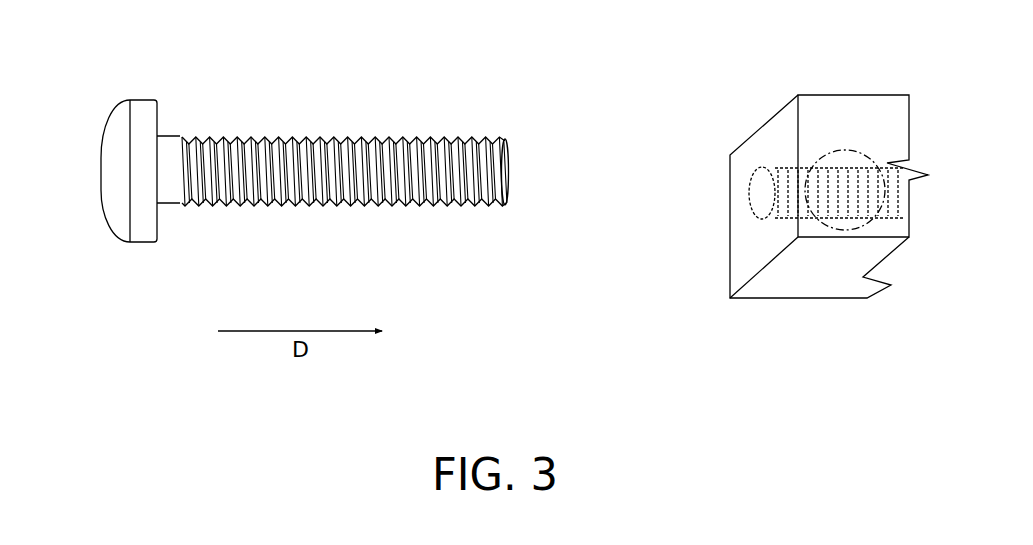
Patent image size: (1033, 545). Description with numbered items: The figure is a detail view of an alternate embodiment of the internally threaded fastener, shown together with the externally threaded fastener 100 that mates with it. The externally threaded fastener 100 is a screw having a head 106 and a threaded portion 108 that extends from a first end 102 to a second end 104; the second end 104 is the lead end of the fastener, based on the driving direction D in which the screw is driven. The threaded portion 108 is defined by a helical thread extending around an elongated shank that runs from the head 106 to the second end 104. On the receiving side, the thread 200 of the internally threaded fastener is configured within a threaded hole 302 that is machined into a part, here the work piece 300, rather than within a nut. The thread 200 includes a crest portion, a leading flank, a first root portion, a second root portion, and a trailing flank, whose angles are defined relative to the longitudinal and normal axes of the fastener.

The externally threaded fastener 100 is at (305, 170).
The first end 102 is at (102, 230).
The second end 104 is at (522, 215).
The head 106 is at (140, 100).
The threaded portion 108 is at (262, 137).
The thread 200 is at (823, 155).
The work piece 300 is at (799, 164).
The threaded hole 302 is at (742, 210).